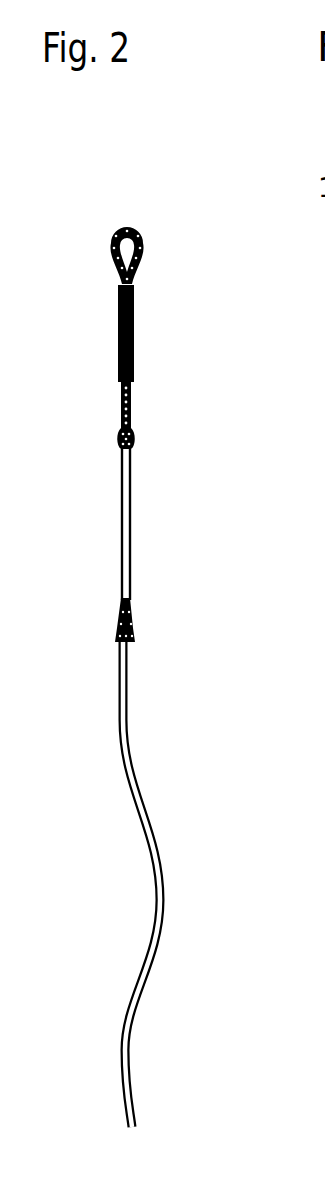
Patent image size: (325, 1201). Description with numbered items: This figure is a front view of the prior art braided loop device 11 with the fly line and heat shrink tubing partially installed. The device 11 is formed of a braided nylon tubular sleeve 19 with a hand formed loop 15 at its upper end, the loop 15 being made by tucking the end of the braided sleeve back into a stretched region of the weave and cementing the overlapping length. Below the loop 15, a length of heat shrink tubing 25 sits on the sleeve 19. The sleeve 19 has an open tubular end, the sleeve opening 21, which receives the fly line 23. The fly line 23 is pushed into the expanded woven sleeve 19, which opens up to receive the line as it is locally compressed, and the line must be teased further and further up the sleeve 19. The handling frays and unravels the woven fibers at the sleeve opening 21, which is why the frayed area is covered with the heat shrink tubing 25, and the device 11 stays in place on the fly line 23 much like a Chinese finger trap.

The braided loop device 11 is at (107, 222).
The loop 15 is at (146, 248).
The heat shrink tubing 25 is at (138, 338).
The braided tubular sleeve 19 is at (117, 438).
The sleeve opening 21 is at (137, 628).
The fly line 23 is at (163, 863).